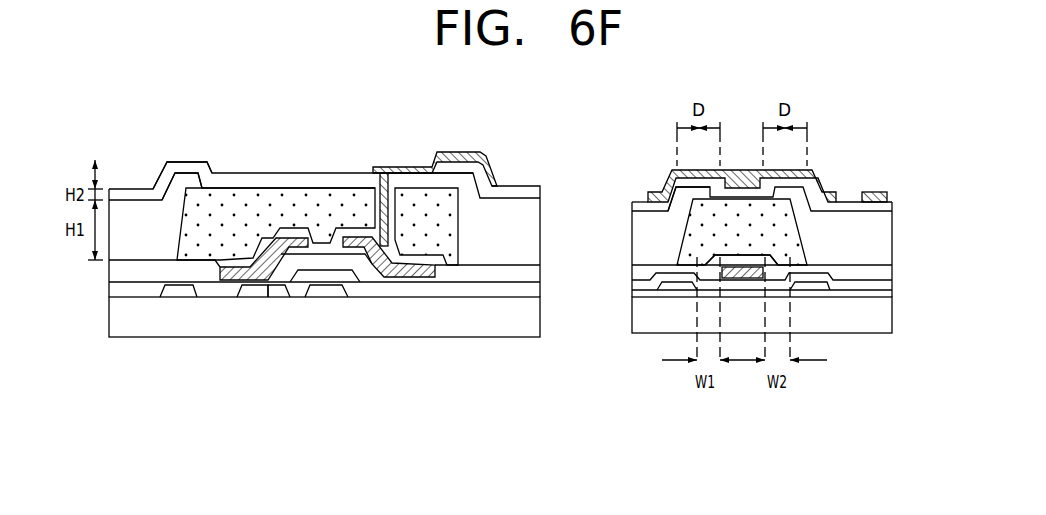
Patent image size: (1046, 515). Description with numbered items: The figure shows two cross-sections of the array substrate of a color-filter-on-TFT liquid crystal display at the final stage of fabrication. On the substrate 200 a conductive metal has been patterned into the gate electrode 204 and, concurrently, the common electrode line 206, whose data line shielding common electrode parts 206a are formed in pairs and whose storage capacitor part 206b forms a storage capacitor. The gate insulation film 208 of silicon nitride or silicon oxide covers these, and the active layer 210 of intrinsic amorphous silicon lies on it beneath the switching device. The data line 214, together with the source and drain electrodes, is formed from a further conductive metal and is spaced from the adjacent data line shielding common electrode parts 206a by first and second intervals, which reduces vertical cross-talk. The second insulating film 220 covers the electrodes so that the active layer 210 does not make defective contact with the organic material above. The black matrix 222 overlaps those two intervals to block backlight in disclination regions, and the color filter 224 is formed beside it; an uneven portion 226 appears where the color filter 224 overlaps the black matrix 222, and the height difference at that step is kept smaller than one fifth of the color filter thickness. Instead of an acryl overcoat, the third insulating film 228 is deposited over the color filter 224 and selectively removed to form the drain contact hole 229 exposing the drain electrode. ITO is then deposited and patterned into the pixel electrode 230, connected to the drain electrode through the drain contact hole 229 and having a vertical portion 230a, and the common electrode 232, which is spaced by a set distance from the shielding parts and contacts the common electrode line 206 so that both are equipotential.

The substrate 200 is at (530, 313).
The gate electrode 204 is at (323, 289).
The common electrode line 206 is at (511, 354).
The data line shielding common electrode part 206a is at (178, 296).
The storage capacitor part 206b is at (282, 294).
The gate insulation film 208 is at (530, 287).
The active layer 210 is at (348, 257).
The data line 214 is at (228, 266).
The second insulating film 220 is at (530, 266).
The black matrix 222 is at (262, 210).
The color filter 224 is at (132, 217).
The uneven portion 226 is at (187, 182).
The third insulating film 228 is at (540, 189).
The drain contact hole 229 is at (382, 242).
The pixel electrode 230 is at (400, 170).
The vertical portion 230a is at (868, 192).
The common electrode 232 is at (817, 172).